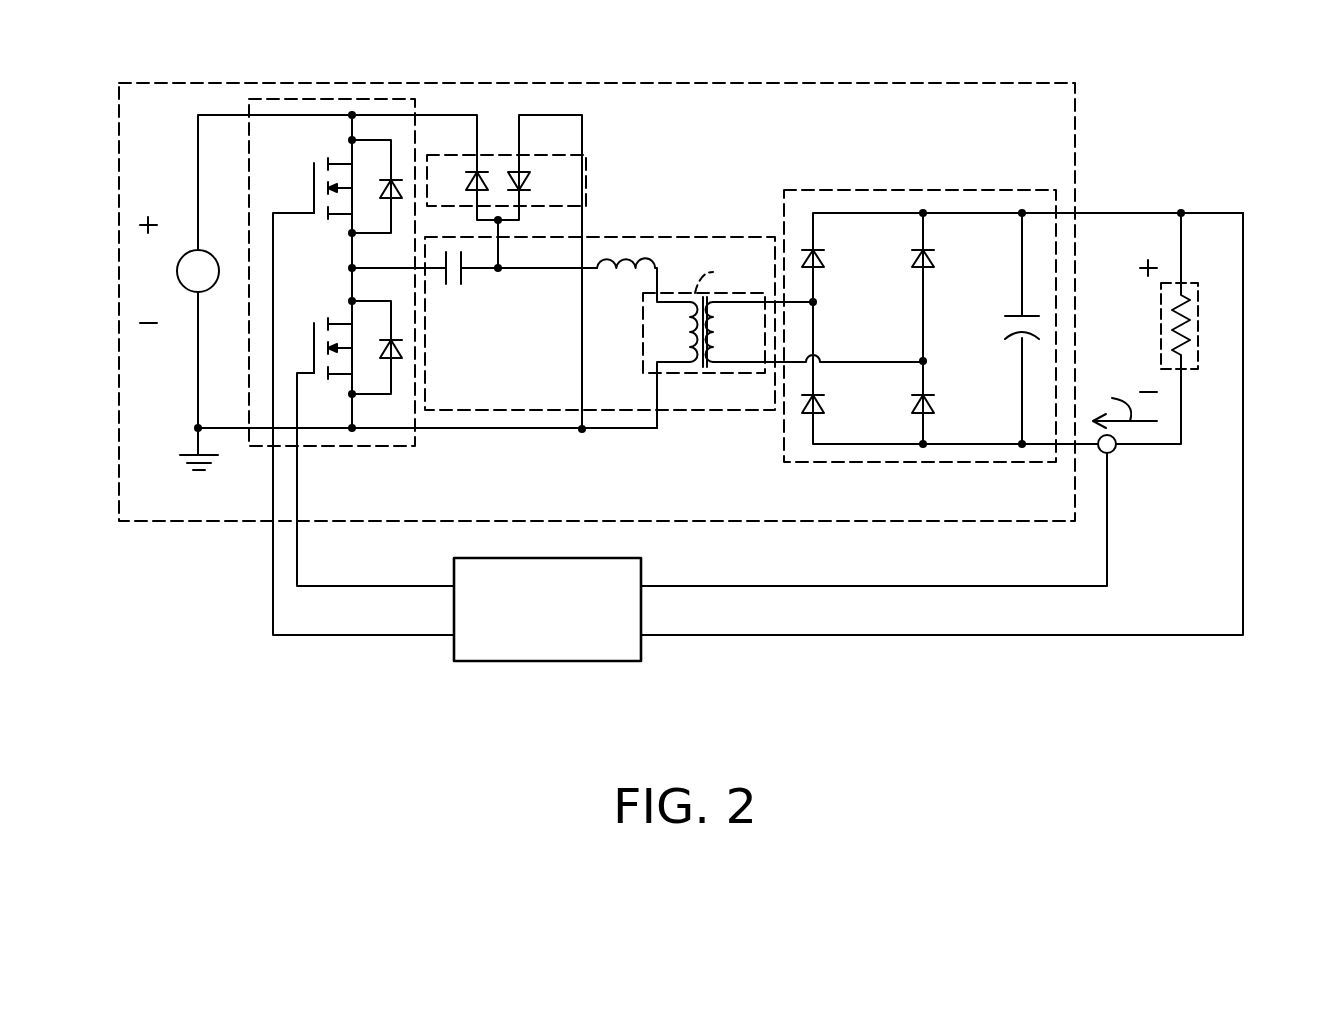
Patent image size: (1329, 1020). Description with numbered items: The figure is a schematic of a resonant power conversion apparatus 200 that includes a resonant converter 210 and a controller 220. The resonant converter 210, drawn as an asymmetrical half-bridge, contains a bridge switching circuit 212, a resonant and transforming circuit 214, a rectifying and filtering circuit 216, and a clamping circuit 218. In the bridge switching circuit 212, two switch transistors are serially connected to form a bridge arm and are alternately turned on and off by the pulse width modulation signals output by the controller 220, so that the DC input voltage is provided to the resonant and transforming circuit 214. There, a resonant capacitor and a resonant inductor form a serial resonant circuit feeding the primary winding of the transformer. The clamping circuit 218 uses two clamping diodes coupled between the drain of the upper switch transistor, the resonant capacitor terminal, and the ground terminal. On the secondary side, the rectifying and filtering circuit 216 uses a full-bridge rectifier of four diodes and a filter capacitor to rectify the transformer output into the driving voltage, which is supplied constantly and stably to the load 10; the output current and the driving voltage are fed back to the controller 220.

The resonant power conversion apparatus 200 is at (718, 372).
The resonant converter 210 is at (720, 83).
The bridge switching circuit 212 is at (387, 446).
The resonant and transforming circuit 214 is at (590, 237).
The rectifying and filtering circuit 216 is at (855, 190).
The clamping circuit 218 is at (588, 181).
The controller 220 is at (547, 661).
The load 10 is at (1200, 300).